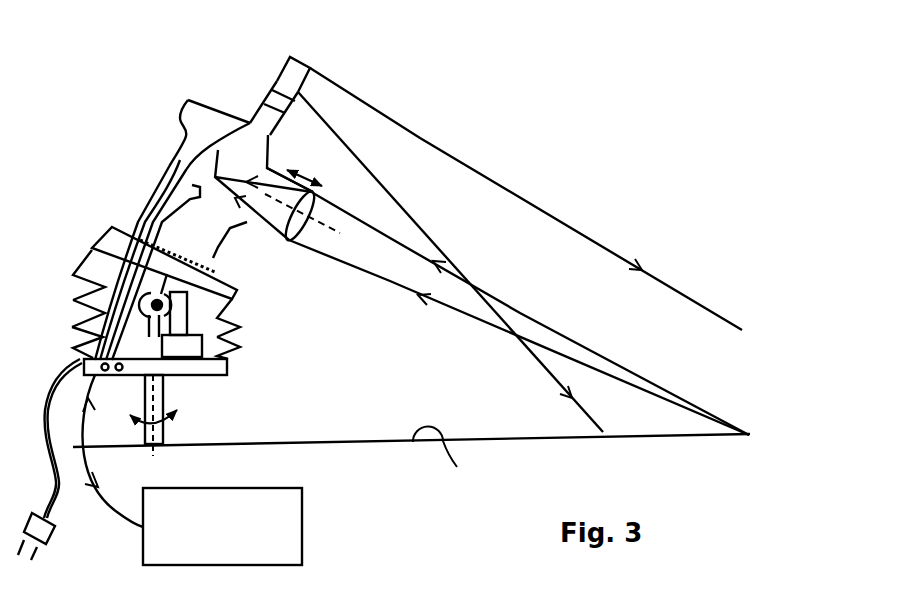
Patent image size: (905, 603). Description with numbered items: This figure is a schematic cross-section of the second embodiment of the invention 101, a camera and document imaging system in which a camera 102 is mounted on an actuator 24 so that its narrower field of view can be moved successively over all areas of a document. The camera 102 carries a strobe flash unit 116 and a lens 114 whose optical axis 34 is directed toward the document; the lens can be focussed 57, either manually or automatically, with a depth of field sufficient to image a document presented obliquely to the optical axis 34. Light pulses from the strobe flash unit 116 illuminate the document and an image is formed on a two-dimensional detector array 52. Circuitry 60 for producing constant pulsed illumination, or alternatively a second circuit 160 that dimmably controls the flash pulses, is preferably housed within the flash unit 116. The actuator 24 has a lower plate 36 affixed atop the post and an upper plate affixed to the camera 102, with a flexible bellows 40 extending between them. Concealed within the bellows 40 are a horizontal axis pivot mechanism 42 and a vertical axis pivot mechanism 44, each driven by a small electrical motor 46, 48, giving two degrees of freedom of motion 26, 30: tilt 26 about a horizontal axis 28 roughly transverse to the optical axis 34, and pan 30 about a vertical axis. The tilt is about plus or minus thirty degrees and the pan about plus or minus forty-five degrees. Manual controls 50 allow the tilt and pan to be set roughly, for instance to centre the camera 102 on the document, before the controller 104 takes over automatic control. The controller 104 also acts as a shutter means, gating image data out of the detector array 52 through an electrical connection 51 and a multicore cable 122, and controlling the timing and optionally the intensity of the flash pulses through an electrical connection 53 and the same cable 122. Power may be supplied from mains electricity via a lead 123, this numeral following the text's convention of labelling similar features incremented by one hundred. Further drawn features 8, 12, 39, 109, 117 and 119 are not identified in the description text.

The second embodiment of the invention 101 is at (116, 104).
The camera 102 is at (188, 99).
The circuitry 60 is at (282, 86).
The second circuit 160 is at (282, 86).
The strobe flash unit 116 is at (287, 57).
The emitted light beam 119 is at (550, 213).
The reflected light 117 is at (447, 312).
The angle of incidence 8 is at (411, 460).
The two-dimensional detector array 52 is at (267, 166).
The focussing of the lens 57 is at (317, 178).
The electrical connection 51 is at (147, 200).
The electrical connection 53 is at (147, 208).
The lens 114 is at (256, 232).
The optical axis 34 is at (338, 240).
The optical axis 109 is at (167, 427).
The pivot bracket 39 is at (237, 292).
The actuator 24 is at (88, 240).
The horizontal axis pivot mechanism 42 is at (97, 265).
The degree of freedom of motion 26 is at (98, 300).
The vertical axis pivot mechanism 44 is at (88, 348).
The small electrical motor 46 is at (234, 303).
The flexible bellows 40 is at (247, 337).
The horizontal axis 28 is at (233, 323).
The lower plate 36 is at (226, 360).
The small electrical motor 48 is at (228, 374).
The manual controls 50 is at (83, 367).
The shaft 12 is at (156, 403).
The degree of freedom of motion 30 is at (180, 413).
The multicore cable 122 is at (100, 470).
The power plug 123 is at (57, 508).
The controller 104 is at (302, 538).